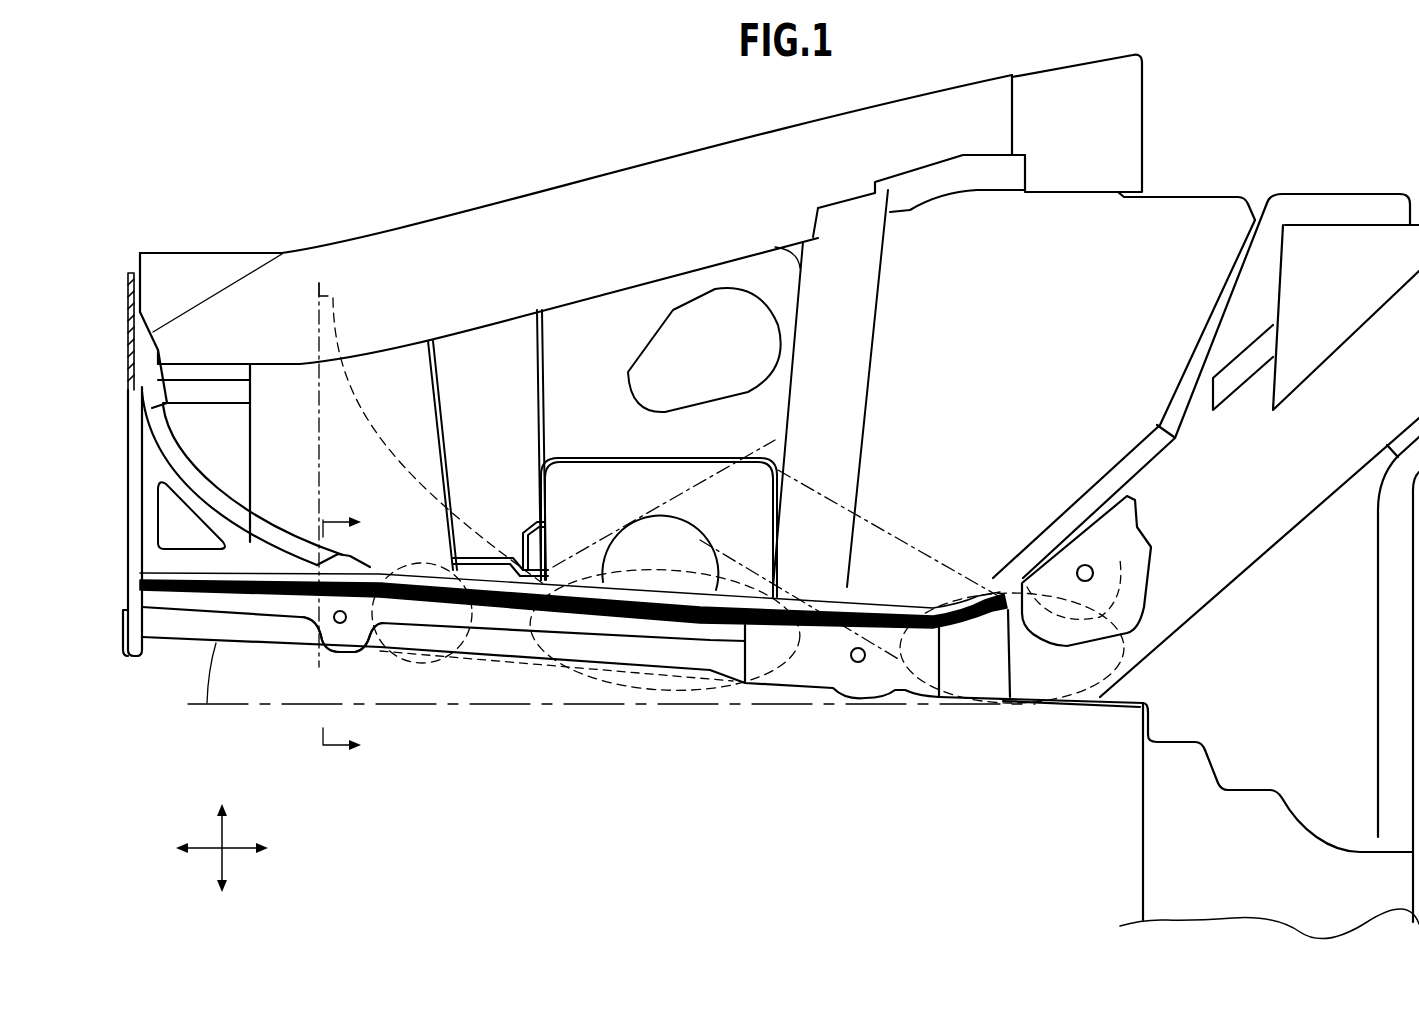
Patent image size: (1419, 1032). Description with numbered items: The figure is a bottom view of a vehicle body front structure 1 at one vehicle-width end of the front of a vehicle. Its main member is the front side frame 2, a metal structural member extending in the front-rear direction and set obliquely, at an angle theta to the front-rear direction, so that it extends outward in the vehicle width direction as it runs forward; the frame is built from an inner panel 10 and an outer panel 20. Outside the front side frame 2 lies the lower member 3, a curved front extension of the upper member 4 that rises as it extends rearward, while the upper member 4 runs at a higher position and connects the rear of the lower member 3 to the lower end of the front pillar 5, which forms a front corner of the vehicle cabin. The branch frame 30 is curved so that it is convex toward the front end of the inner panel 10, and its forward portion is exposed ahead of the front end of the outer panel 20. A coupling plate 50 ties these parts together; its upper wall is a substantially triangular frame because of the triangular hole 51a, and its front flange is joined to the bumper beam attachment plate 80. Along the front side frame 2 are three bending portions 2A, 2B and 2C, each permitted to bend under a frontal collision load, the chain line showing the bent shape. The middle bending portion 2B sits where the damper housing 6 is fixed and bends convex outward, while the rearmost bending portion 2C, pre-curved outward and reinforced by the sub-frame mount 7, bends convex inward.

The vehicle body front structure 1 is at (285, 100).
The front side frame 2 is at (608, 705).
The bending portion 2A is at (458, 648).
The bending portion 2B is at (677, 683).
The bending portion 2C is at (912, 697).
The lower member 3 is at (280, 257).
The upper member 4 is at (780, 132).
The front pillar 5 is at (1033, 66).
The damper housing 6 is at (650, 458).
The sub-frame mount 7 is at (1103, 547).
The inner panel 10 is at (527, 663).
The outer panel 20 is at (382, 600).
The branch frame 30 is at (246, 497).
The coupling plate 50 is at (157, 554).
The hole 51a is at (160, 524).
The bumper beam attachment plate 80 is at (128, 496).